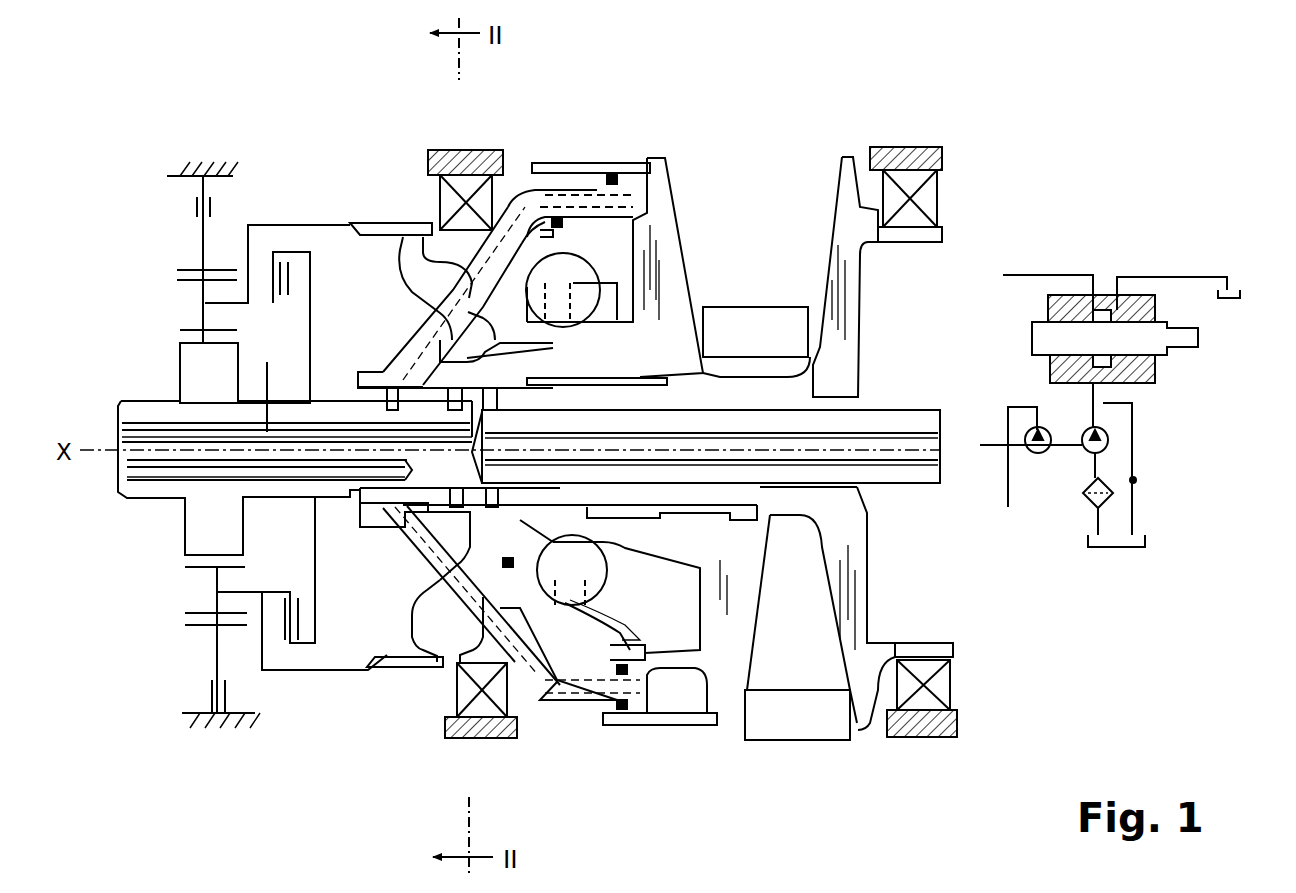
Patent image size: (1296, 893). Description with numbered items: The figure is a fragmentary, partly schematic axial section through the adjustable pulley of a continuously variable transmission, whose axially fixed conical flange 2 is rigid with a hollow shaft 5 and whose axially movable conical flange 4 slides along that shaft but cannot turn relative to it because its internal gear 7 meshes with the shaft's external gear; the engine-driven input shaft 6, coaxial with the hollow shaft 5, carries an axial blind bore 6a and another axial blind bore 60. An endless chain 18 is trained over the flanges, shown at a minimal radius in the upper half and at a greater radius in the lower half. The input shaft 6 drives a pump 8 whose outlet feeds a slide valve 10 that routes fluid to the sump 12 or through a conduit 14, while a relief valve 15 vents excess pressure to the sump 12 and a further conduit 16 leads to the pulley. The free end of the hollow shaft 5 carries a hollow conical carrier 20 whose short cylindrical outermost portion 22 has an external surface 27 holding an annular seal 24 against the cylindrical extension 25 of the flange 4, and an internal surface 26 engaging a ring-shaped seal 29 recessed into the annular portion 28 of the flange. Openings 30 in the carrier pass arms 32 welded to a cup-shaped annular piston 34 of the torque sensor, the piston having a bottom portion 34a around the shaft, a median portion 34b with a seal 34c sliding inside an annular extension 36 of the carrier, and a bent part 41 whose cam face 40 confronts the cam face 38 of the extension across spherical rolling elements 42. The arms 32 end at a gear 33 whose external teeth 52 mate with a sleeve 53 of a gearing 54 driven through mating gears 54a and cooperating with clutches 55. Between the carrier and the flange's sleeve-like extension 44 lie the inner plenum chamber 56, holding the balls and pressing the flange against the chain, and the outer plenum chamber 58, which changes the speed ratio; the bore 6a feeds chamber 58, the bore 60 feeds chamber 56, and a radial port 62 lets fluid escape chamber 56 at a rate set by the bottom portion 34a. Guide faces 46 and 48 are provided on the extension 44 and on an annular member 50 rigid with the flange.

The axially fixed conical flange 2 is at (847, 333).
The axially movable conical flange 4 is at (657, 193).
The hollow shaft 5 is at (767, 497).
The input shaft 6 is at (183, 486).
The axial blind bore 6a is at (267, 384).
The internal gear 7 is at (603, 378).
The pump 8 is at (1065, 446).
The slide valve 10 is at (1142, 362).
The sump 12 is at (1236, 290).
The conduit 14 is at (1030, 275).
The pressure regulating relief valve 15 is at (1134, 480).
The further conduit 16 is at (1018, 407).
The endless flexible torque transmitting device 18 is at (823, 722).
The conical carrier 20 is at (493, 690).
The radially outermost portion of the carrier 22 is at (592, 702).
The annular seal 24 is at (622, 709).
The cylindrical extension 25 is at (667, 716).
The cylindrical internal surface 26 is at (568, 674).
The cylindrical external surface 27 is at (563, 695).
The annular portion of the movable flange 28 is at (597, 230).
The ring-shaped seal 29 is at (567, 273).
The openings 30 is at (455, 528).
The arms 32 is at (383, 665).
The annular member (gear) 33 is at (428, 648).
The annular piston 34 is at (530, 565).
The bottom portion of the piston 34a is at (430, 540).
The median portion of the piston 34b is at (490, 555).
The ring-shaped seal 34c is at (503, 570).
The annular extension of the carrier 36 is at (497, 300).
The cam face 38 is at (505, 230).
The annular cam face 40 is at (607, 303).
The bent part of the piston 41 is at (617, 313).
The rolling elements 42 is at (555, 216).
The sleeve-like extension 44 is at (705, 542).
The guide face 46 is at (648, 560).
The guide face 48 is at (612, 628).
The annular member 50 is at (643, 647).
The external teeth 52 is at (403, 240).
The sleeve 53 is at (293, 223).
The gearing 54 is at (193, 298).
The mating gears 54a is at (187, 560).
The clutch 55 is at (197, 200).
The plenum chamber 56 is at (613, 260).
The plenum chamber 58 is at (677, 692).
The axial blind bore 60 is at (878, 427).
The radial port 62 is at (452, 493).